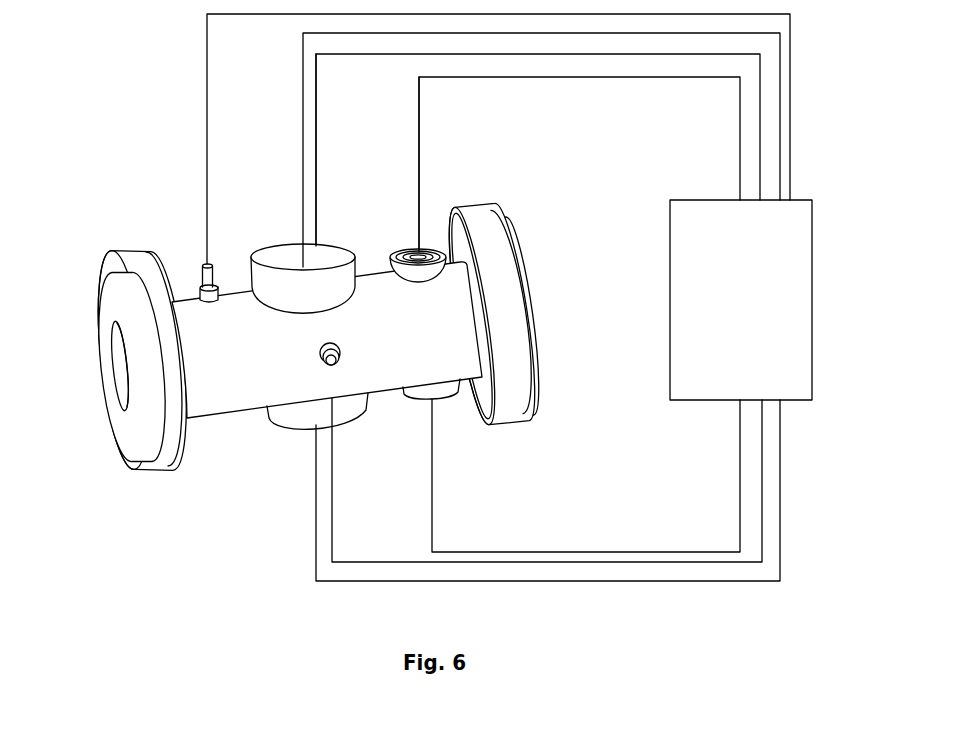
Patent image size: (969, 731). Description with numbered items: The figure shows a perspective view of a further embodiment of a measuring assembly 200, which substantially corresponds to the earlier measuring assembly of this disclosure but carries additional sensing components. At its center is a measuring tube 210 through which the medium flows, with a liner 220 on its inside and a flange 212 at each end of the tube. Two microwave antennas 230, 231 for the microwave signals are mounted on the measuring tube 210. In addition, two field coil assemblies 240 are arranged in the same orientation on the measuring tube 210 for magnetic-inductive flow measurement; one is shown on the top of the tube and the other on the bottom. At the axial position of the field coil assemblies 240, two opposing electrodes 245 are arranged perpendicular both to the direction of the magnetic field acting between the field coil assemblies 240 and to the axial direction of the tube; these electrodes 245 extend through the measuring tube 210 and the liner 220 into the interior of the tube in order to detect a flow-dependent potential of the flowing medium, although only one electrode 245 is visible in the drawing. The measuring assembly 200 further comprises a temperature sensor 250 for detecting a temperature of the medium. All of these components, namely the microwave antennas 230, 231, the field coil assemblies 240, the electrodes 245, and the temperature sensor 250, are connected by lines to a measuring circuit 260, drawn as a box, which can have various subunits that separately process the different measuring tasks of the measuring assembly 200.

The measuring assembly 200 is at (144, 212).
The measuring tube 210 is at (240, 287).
The flange 212 is at (508, 377).
The liner 220 is at (118, 355).
The microwave antenna 230 is at (428, 403).
The microwave antenna 231 is at (410, 233).
The field coil assembly 240 is at (325, 252).
The electrode 245 is at (326, 367).
The temperature sensor 250 is at (208, 264).
The measuring circuit 260 is at (797, 228).